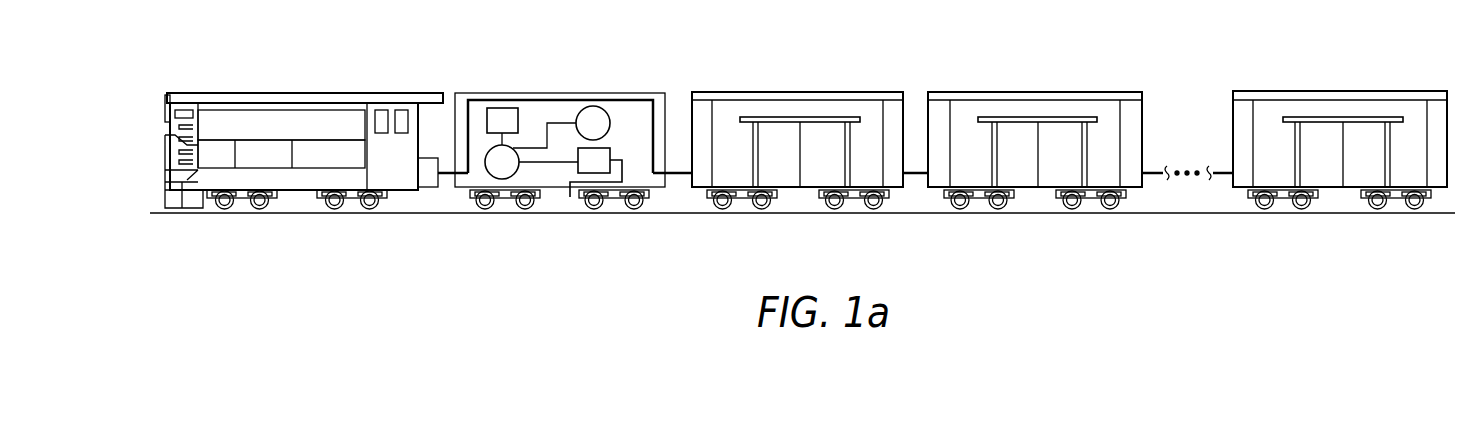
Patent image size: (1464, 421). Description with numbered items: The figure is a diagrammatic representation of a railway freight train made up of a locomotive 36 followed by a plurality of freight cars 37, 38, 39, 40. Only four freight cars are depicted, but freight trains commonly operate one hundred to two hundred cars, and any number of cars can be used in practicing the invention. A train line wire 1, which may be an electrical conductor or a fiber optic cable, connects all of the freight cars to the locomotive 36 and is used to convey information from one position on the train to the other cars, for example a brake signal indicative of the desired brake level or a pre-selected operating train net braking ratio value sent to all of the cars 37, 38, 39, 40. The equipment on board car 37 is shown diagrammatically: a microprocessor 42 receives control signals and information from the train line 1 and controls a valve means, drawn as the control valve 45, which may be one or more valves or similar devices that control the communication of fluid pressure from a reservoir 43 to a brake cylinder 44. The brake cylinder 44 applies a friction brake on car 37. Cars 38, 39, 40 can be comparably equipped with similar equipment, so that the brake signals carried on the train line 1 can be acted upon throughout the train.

The train line wire 1 is at (681, 178).
The locomotive 36 is at (311, 93).
The car 37 is at (520, 93).
The car 38 is at (768, 92).
The car 39 is at (1018, 92).
The car 40 is at (1368, 92).
The microprocessor 42 is at (487, 116).
The reservoir 43 is at (610, 121).
The brake cylinder 44 is at (578, 172).
The control valve CV 45 is at (513, 148).